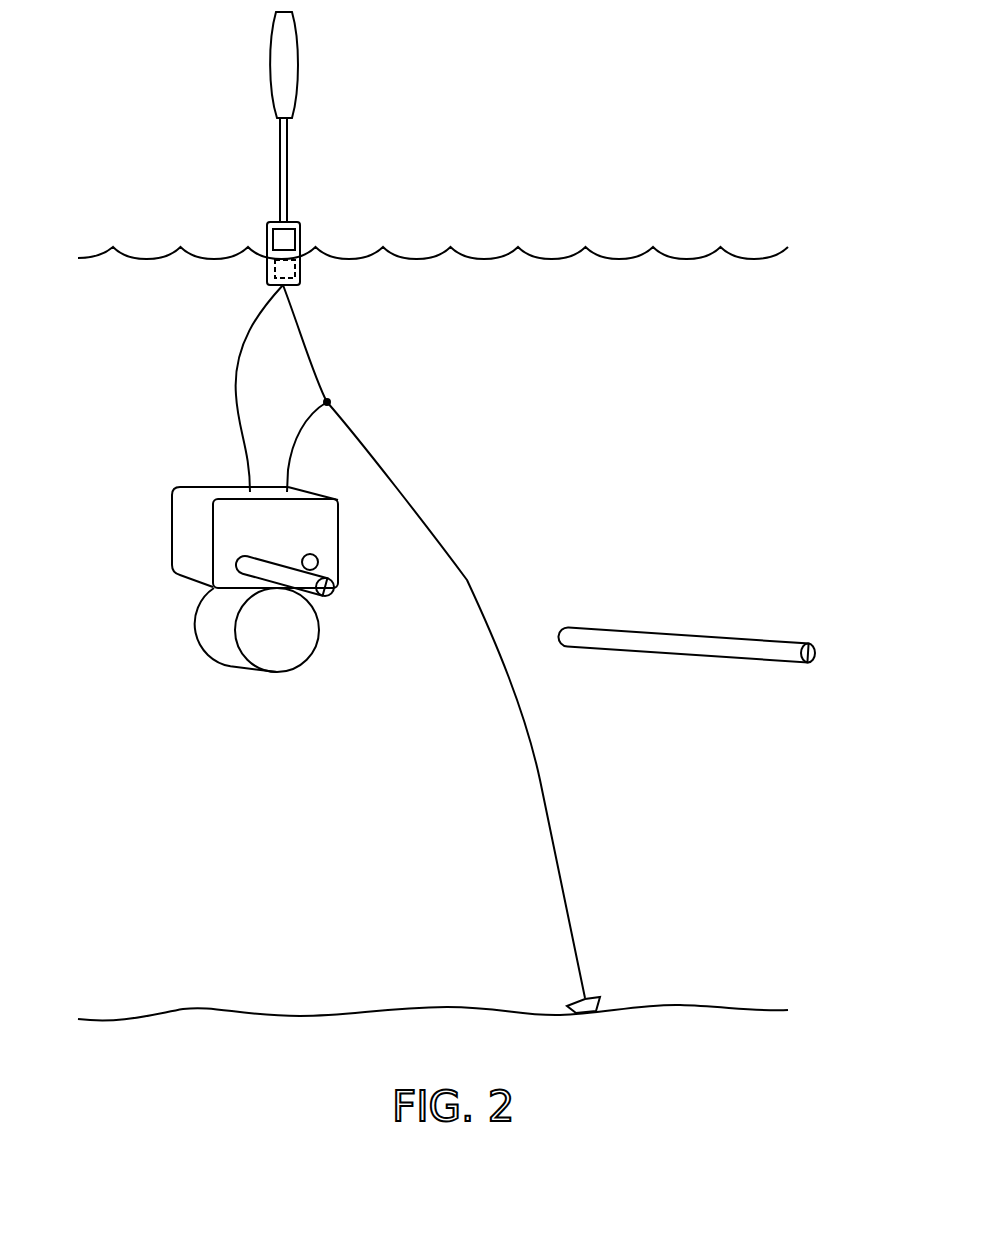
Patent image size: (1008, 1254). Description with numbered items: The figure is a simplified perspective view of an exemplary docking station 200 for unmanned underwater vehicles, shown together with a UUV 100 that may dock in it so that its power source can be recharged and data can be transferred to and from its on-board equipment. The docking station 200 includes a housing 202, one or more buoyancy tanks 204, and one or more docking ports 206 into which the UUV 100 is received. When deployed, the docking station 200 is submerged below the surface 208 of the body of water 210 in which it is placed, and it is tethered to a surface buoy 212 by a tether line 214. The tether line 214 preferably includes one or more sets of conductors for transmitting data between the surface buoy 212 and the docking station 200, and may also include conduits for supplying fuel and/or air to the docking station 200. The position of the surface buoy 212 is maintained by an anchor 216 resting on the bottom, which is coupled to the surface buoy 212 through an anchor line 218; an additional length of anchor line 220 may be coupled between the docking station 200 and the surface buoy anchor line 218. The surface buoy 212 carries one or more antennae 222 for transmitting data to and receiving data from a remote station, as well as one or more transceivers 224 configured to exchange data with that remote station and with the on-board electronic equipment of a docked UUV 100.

The UUV 100 is at (327, 597).
The docking station 200 is at (512, 372).
The housing 202 is at (178, 532).
The buoyancy tank 204 is at (232, 668).
The docking port 206 is at (318, 563).
The surface 208 is at (597, 254).
The body of water 210 is at (756, 362).
The surface buoy 212 is at (300, 237).
The tether line 214 is at (238, 367).
The anchor 216 is at (595, 994).
The anchor line 218 is at (519, 702).
The additional length of anchor line 220 is at (307, 418).
The antenna 222 is at (302, 67).
The transceiver 224 is at (267, 233).